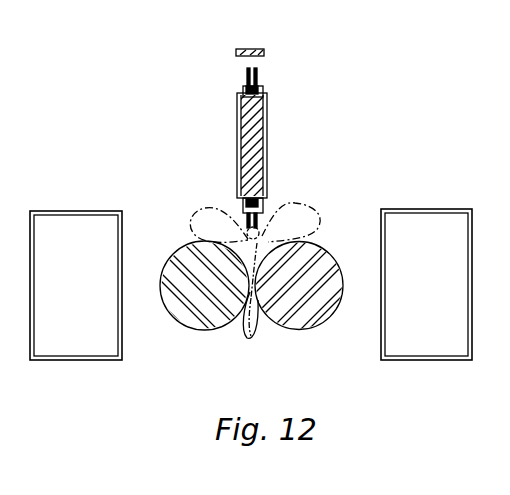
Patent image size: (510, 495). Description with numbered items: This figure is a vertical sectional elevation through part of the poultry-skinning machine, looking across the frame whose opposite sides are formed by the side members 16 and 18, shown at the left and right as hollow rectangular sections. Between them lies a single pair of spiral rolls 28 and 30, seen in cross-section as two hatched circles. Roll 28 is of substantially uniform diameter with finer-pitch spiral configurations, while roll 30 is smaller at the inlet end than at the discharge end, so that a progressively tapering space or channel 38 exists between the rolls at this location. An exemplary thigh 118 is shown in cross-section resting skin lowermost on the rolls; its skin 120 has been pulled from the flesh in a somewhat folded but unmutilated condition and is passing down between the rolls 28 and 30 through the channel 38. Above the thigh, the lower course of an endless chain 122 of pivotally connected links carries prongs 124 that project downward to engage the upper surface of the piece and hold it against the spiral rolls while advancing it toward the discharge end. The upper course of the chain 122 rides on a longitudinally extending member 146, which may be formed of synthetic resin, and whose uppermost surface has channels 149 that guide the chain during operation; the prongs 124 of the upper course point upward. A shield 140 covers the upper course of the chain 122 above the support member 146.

The side member 16 is at (68, 211).
The side member 18 is at (426, 209).
The roll 28 is at (167, 262).
The roll 30 is at (329, 257).
The space or channel 38 is at (256, 275).
The thigh 118 is at (304, 211).
The skin 120 is at (258, 338).
The endless chain 122 is at (262, 90).
The prongs 124 is at (246, 76).
The shield 140 is at (256, 39).
The longitudinally extending member 146 is at (261, 145).
The channels 149 is at (243, 105).